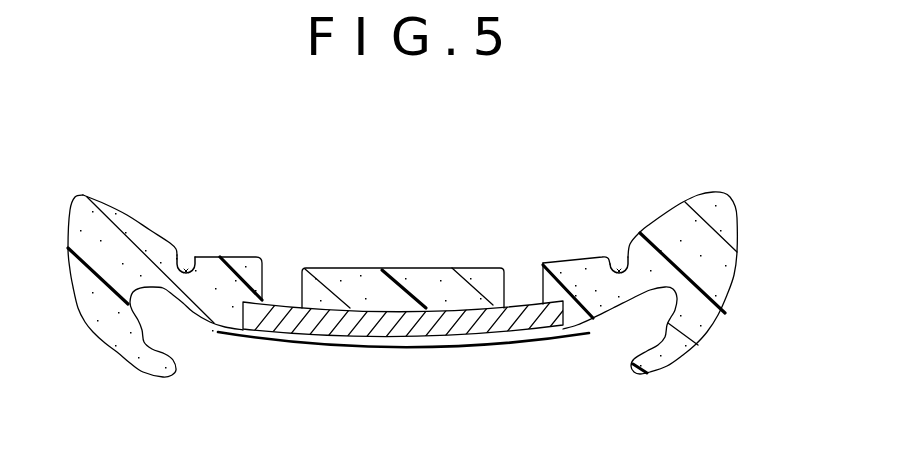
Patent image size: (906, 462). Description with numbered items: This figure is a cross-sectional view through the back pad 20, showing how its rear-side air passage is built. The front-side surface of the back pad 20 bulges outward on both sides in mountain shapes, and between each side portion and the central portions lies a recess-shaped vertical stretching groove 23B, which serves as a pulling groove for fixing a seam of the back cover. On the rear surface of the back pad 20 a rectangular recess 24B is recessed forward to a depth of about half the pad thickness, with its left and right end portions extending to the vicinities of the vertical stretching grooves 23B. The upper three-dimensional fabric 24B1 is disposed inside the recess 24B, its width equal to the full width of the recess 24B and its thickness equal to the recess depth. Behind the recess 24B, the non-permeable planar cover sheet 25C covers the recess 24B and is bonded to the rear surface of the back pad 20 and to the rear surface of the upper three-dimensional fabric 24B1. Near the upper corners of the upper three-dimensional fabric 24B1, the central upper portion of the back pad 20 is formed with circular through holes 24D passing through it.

The back pad 20 is at (686, 185).
The vertical stretching groove 23B is at (186, 268).
The through hole 24D is at (266, 290).
The recess 24B is at (391, 316).
The upper three-dimensional fabric 24B1 is at (445, 323).
The cover sheet 25C is at (320, 347).